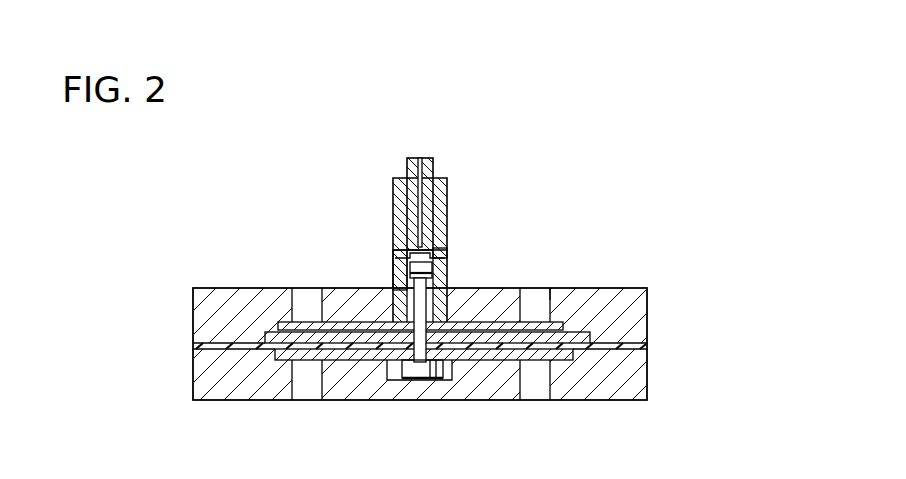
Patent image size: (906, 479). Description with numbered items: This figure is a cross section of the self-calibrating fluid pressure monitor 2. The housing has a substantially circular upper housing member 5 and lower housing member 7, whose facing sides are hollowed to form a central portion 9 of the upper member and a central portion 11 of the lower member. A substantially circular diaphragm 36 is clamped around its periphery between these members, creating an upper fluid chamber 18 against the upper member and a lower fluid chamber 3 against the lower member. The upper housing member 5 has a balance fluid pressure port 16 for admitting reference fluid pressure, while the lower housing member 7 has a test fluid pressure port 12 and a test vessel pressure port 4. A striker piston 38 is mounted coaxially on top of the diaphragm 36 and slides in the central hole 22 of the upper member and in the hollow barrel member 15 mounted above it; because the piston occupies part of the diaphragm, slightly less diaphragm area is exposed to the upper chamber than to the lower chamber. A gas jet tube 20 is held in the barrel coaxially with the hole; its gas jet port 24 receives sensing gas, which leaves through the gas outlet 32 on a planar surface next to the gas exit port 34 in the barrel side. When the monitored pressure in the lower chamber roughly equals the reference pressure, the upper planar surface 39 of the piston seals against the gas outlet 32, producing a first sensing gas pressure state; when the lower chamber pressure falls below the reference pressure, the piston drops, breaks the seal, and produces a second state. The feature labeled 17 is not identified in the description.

The monitor 2 is at (128, 333).
The lower fluid chamber 3 is at (498, 365).
The test vessel pressure port 4 is at (535, 393).
The upper housing member 5 is at (625, 284).
The lower housing member 7 is at (628, 395).
The central portion of the upper member 9 is at (522, 288).
The central portion of the lower member 11 is at (420, 380).
The test fluid pressure port 12 is at (312, 392).
The hollow barrel member 15 is at (447, 200).
The balance fluid pressure port 16 is at (307, 292).
The port 17 is at (545, 288).
The upper fluid chamber 18 is at (255, 338).
The gas jet tube 20 is at (434, 170).
The central hole 22 is at (460, 288).
The gas jet port 24 is at (421, 157).
The gas outlet 32 is at (412, 262).
The gas exit port 34 is at (398, 250).
The diaphragm 36 is at (205, 346).
The striker piston 38 is at (450, 252).
The upper planar surface 39 is at (393, 258).